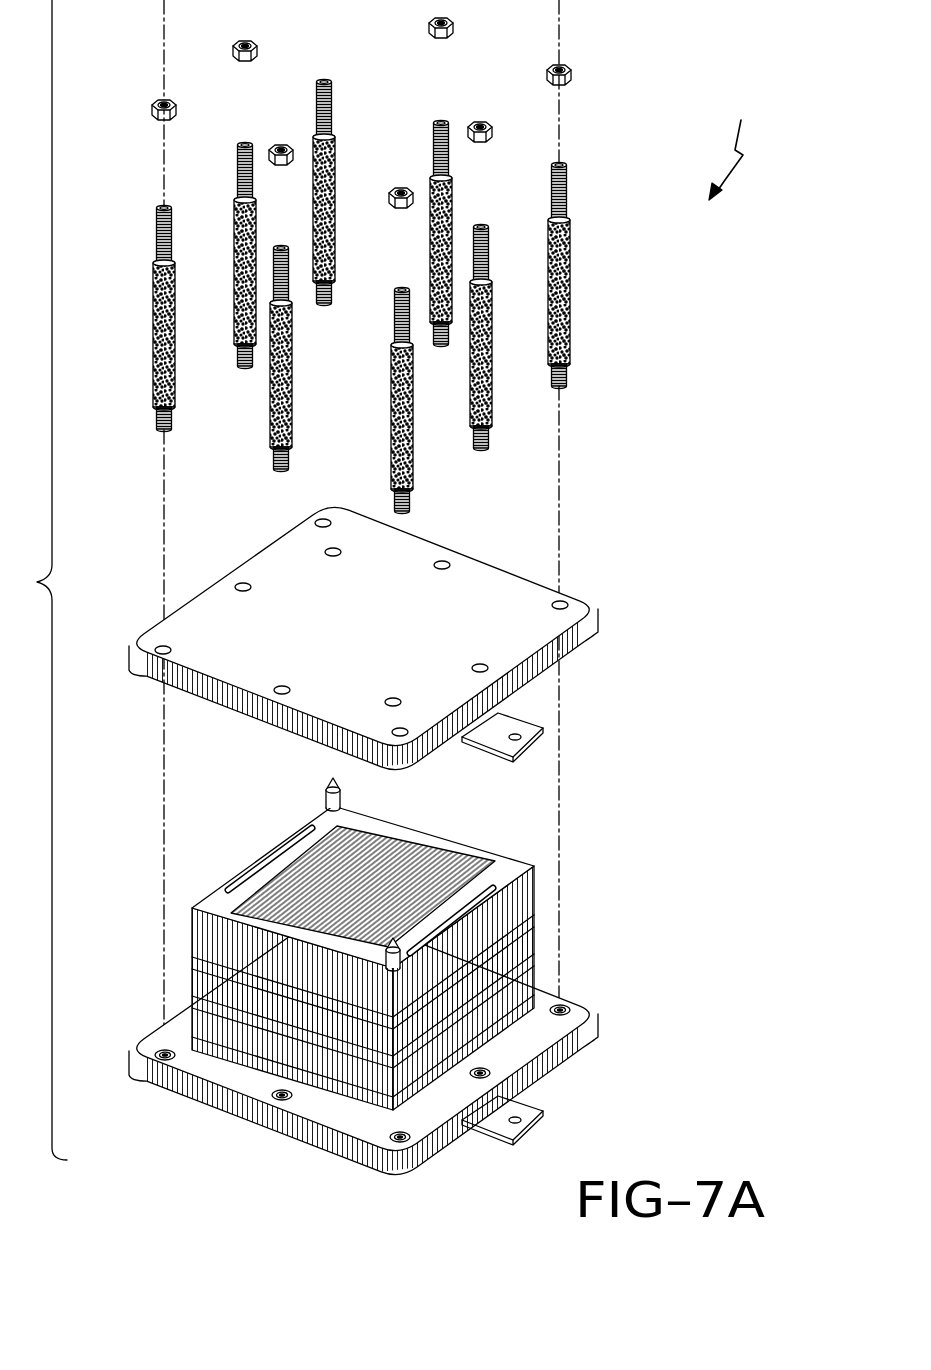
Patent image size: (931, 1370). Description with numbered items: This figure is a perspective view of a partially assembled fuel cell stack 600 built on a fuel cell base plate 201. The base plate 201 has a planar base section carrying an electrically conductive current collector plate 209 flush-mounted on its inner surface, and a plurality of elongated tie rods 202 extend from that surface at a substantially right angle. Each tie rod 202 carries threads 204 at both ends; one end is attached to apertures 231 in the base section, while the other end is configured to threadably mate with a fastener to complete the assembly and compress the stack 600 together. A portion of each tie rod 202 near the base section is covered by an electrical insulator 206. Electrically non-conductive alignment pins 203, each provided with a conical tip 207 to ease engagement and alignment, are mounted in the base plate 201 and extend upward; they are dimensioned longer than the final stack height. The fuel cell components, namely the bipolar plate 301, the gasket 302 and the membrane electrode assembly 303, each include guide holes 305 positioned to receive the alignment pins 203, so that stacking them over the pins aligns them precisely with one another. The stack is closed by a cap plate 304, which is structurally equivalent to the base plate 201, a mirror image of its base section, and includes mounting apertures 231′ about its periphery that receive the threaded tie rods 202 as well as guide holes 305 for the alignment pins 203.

The fuel cell stack 600 is at (740, 144).
The tie rods 202 is at (435, 152).
The threads 204 is at (318, 105).
The electrical insulator 206 is at (322, 213).
The cap plate 304 is at (595, 620).
The guide holes 305 is at (333, 552).
The mounting apertures 231′ is at (320, 520).
The current collector plate 209 is at (533, 750).
The fuel cell base plate 201 is at (582, 1025).
The apertures 231 is at (562, 1005).
The fuel cell bipolar plate 301 is at (505, 875).
The membrane electrode assembly 303 is at (218, 985).
The gasket 302 is at (287, 1003).
The alignment pins 203 is at (305, 848).
The conical tip 207 is at (330, 798).